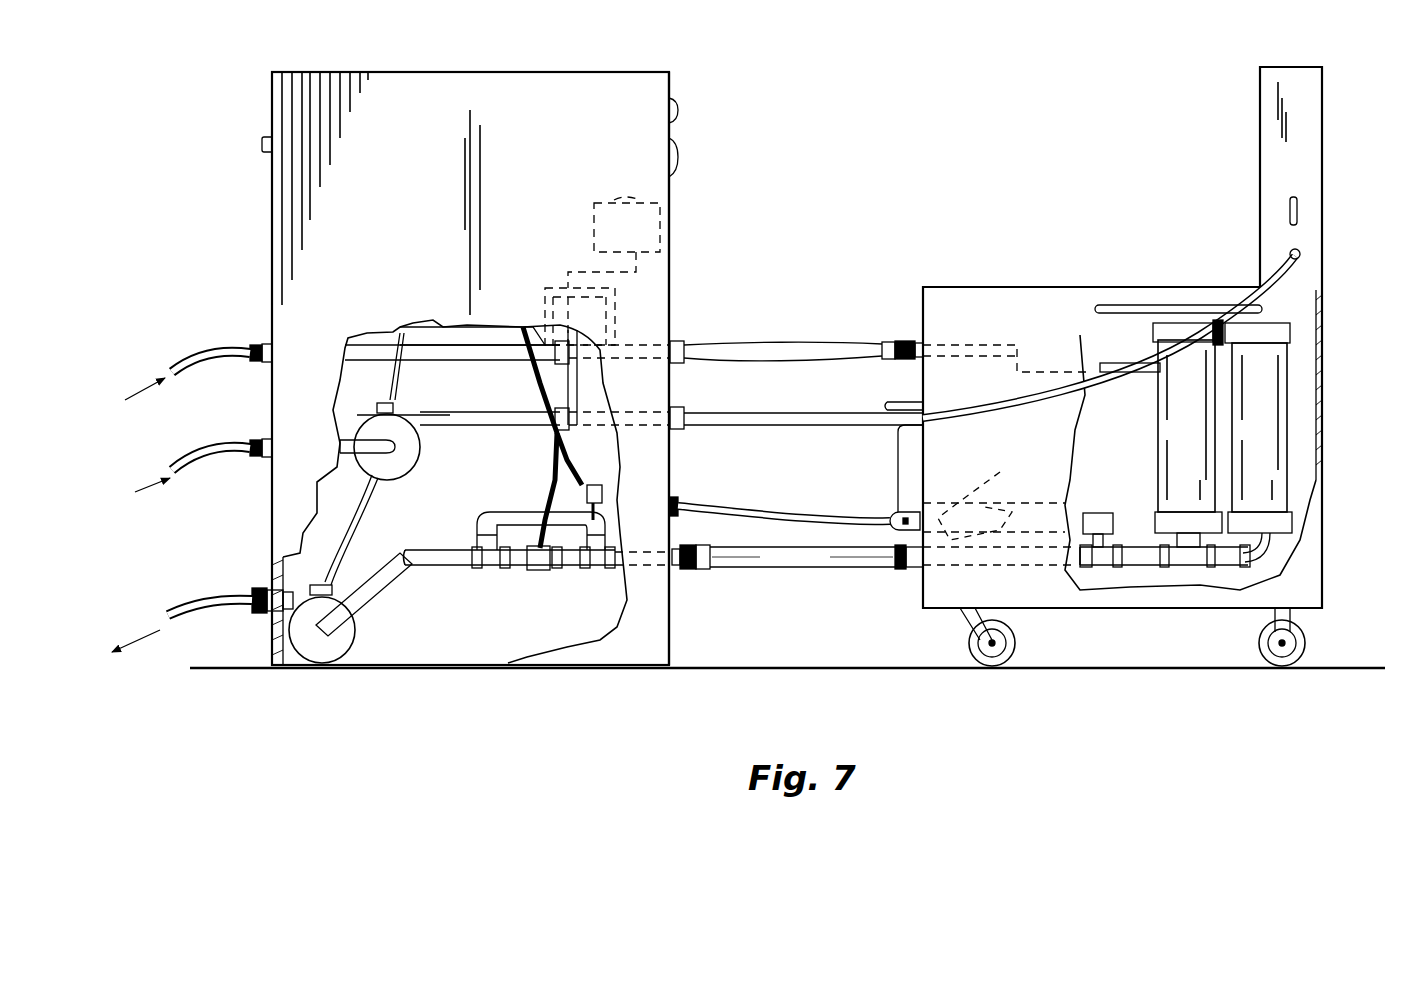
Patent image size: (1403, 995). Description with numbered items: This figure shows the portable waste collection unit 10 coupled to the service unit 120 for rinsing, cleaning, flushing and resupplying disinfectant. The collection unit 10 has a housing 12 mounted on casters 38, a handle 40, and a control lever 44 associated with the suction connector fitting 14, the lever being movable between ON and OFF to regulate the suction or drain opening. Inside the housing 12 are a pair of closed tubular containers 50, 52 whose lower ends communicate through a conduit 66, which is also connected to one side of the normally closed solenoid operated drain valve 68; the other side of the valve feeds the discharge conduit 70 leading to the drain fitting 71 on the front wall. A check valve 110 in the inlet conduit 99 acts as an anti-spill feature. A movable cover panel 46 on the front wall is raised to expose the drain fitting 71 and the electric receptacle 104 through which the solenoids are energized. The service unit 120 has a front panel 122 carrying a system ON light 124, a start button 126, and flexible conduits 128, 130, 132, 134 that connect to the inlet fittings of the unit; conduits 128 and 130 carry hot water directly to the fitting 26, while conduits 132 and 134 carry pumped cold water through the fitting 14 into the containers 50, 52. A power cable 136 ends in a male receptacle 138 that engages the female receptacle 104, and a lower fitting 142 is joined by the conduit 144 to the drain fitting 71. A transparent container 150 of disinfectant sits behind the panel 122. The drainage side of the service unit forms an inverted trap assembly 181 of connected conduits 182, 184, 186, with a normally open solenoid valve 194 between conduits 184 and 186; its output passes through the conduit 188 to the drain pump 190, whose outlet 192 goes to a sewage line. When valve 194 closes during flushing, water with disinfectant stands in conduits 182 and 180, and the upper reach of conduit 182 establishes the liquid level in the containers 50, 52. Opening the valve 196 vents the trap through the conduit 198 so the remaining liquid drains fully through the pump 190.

The waste collection unit 10 is at (1100, 225).
The housing 12 is at (957, 285).
The suction connector fitting 14 is at (1288, 252).
The fitting 26 is at (908, 343).
The casters 38 is at (1000, 655).
The handle 40 is at (905, 402).
The control lever 44 is at (1288, 212).
The movable cover panel 46 is at (926, 468).
The container 50 is at (1155, 407).
The container 52 is at (1294, 407).
The conduit 66 is at (1127, 547).
The solenoid operated drain valve 68 is at (1098, 513).
The discharge conduit 70 is at (1027, 560).
The drain fitting 71 is at (917, 572).
The inlet conduit 99 is at (1130, 362).
The electric receptacle 104 is at (1000, 485).
The check valve 110 is at (1093, 360).
The service unit 120 is at (768, 205).
The front panel 122 is at (669, 277).
The system ON light 124 is at (680, 106).
The start button 126 is at (680, 160).
The flexible conduit 128 is at (756, 319).
The flexible conduit 130 is at (700, 345).
The flexible conduit 132 is at (20, 2).
The flexible conduit 134 is at (705, 415).
The power cable 136 is at (718, 512).
The male receptacle 138 is at (912, 512).
The fitting 142 is at (682, 570).
The conduit 144 is at (843, 557).
The transparent container of disinfectant 150 is at (594, 215).
The conduit 180 is at (645, 560).
The inverted trap assembly 181 is at (557, 605).
The conduit 182 is at (505, 515).
The conduit 184 is at (570, 568).
The conduit 186 is at (500, 567).
The conduit 188 is at (360, 600).
The drain pump 190 is at (330, 647).
The outlet 192 is at (280, 590).
The solenoid valve 194 is at (532, 572).
The valve 196 is at (602, 490).
The conduit 198 is at (598, 512).